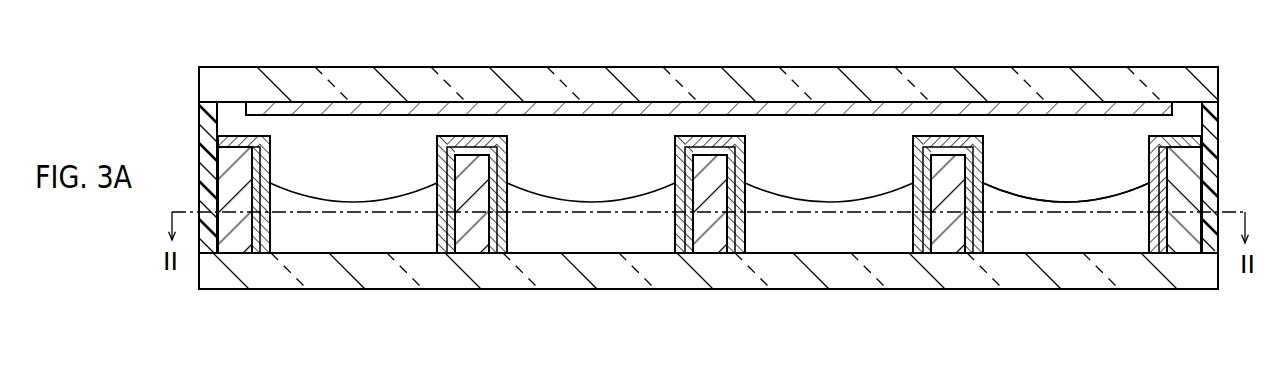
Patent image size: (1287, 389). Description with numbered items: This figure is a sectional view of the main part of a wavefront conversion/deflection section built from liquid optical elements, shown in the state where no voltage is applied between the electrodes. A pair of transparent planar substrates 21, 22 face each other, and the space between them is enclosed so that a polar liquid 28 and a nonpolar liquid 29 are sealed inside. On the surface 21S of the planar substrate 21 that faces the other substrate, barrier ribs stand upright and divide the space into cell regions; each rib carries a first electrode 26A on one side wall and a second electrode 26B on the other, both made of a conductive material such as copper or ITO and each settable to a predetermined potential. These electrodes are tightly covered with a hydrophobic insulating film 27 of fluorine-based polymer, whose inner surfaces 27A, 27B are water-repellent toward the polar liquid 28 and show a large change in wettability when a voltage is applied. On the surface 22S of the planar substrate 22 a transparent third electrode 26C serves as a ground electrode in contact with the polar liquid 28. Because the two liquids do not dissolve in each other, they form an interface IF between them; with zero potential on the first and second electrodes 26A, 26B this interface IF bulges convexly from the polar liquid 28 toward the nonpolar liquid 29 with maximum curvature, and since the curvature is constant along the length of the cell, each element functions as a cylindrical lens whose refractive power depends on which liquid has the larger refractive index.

The planar substrate 21 is at (258, 277).
The surface of planar substrate 21S is at (1098, 253).
The planar substrate 22 is at (257, 77).
The surface of planar substrate 22S is at (1032, 105).
The first electrode 26A is at (498, 253).
The second electrode 26B is at (683, 253).
The third electrode 26C is at (1117, 108).
The hydrophobic insulating film 27 is at (443, 253).
The inner surface 27A is at (509, 151).
The inner surface 27B is at (673, 151).
The polar liquid 28 is at (828, 130).
The nonpolar liquid 29 is at (831, 233).
The interface IF is at (1058, 204).